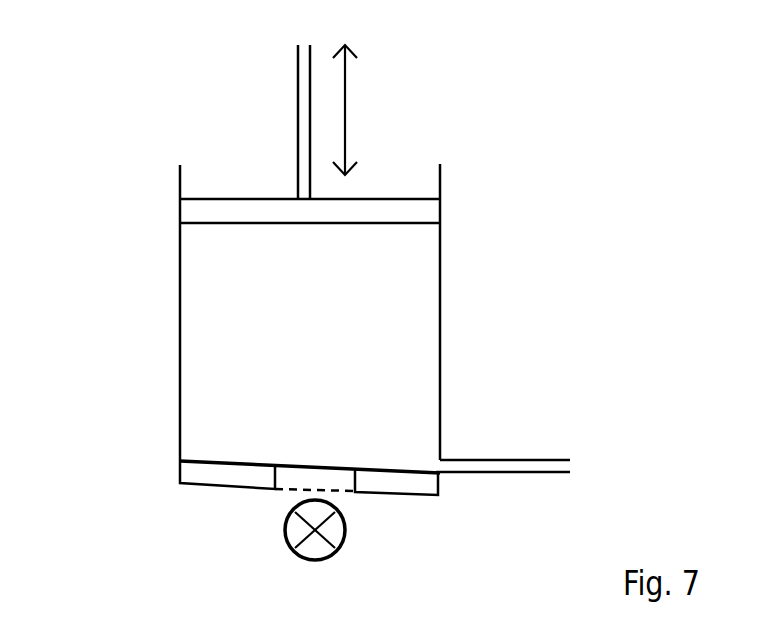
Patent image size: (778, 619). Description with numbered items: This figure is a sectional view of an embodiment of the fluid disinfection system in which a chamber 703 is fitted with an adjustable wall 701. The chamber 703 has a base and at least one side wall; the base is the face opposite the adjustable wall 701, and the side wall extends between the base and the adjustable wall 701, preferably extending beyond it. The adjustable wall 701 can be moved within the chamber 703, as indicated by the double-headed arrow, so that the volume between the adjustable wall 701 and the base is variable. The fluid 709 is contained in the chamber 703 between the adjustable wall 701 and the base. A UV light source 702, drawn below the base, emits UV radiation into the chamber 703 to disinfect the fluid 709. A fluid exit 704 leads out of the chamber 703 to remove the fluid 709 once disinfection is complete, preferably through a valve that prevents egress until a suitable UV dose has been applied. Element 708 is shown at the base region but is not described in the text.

The adjustable wall 701 is at (255, 212).
The UV light source 702 is at (275, 530).
The chamber 703 is at (170, 325).
The fluid exit 704 is at (533, 443).
The porous plate 708 is at (342, 495).
The fluid 709 is at (392, 293).